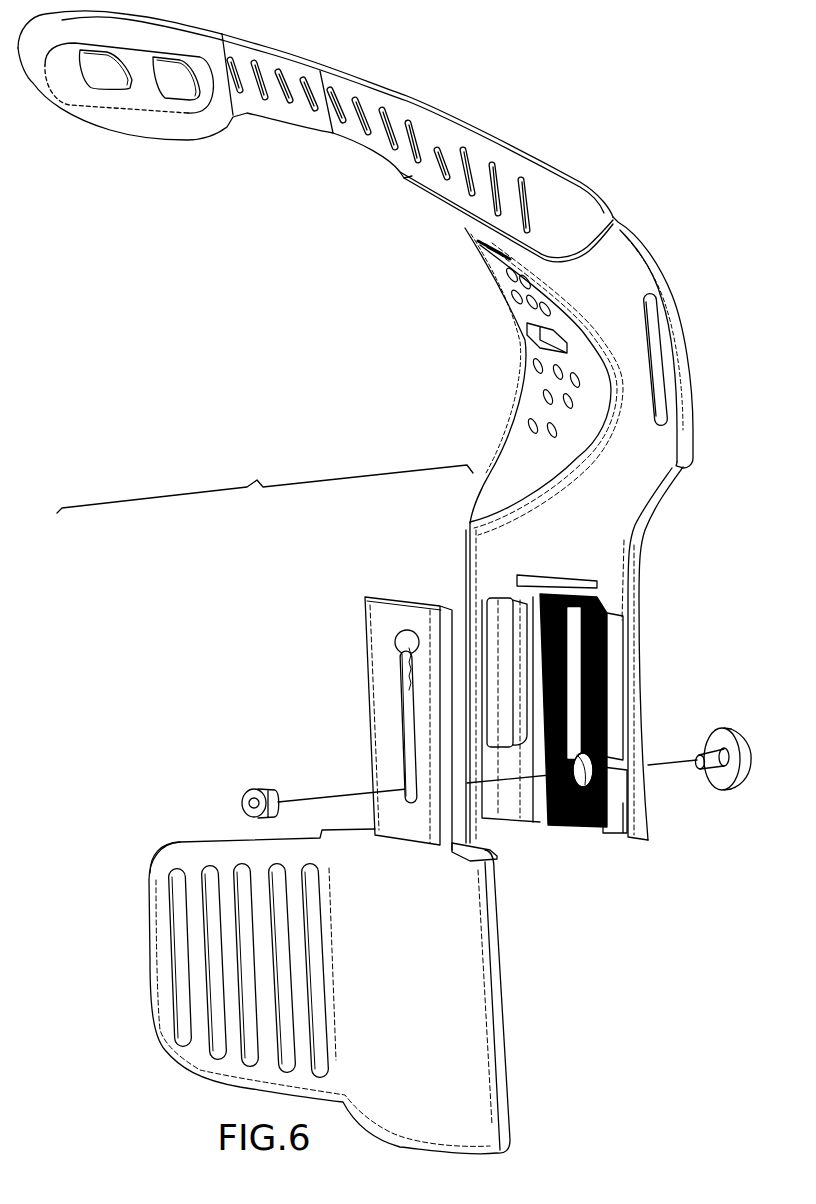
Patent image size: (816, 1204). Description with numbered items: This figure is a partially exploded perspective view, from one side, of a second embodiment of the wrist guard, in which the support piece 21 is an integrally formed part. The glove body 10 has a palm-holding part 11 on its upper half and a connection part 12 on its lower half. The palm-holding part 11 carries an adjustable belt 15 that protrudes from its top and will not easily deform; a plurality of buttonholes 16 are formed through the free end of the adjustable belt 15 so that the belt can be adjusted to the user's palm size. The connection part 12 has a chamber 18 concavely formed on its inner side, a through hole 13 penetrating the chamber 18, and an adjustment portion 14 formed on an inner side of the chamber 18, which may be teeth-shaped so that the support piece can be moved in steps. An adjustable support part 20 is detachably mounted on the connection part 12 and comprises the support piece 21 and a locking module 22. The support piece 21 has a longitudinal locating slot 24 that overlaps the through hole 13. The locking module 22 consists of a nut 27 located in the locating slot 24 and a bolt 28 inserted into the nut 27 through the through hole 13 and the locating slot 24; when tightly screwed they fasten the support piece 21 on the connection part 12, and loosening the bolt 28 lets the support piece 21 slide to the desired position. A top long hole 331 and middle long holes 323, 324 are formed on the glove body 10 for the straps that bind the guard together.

The glove body 10 is at (378, 435).
The palm-holding part 11 is at (627, 273).
The connection part 12 is at (620, 600).
The through hole 13 is at (587, 778).
The adjustment portion 14 is at (547, 593).
The adjustable belt 15 is at (353, 80).
The buttonholes 16 is at (177, 68).
The chamber 18 is at (540, 813).
The adjustable support part 20 is at (471, 844).
The support piece 21 is at (373, 623).
The locking module 22 is at (727, 793).
The longitudinal locating slot 24 is at (413, 700).
The nut 27 is at (267, 780).
The bolt 28 is at (733, 730).
The middle long hole 323 is at (507, 607).
The middle long hole 324 is at (613, 633).
The top long hole 331 is at (653, 330).